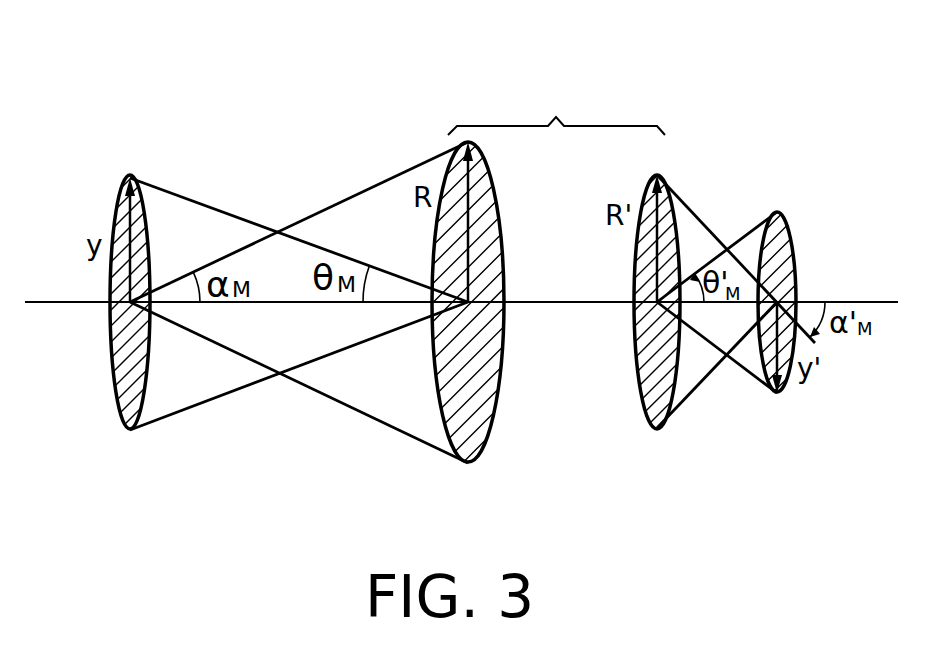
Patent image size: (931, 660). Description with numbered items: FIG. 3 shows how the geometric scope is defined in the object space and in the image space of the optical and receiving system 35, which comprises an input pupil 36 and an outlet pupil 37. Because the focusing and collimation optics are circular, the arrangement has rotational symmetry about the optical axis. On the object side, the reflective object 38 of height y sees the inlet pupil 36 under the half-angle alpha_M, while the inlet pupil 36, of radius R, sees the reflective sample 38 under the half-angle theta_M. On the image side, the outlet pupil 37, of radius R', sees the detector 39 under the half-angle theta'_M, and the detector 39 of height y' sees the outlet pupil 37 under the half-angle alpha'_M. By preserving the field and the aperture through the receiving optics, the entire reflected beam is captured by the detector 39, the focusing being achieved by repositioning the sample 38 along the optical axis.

The optical and receiving system 35 is at (556, 117).
The input pupil 36 is at (453, 422).
The outlet pupil 37 is at (650, 377).
The reflective object 38 is at (125, 370).
The detector image 39 is at (782, 248).